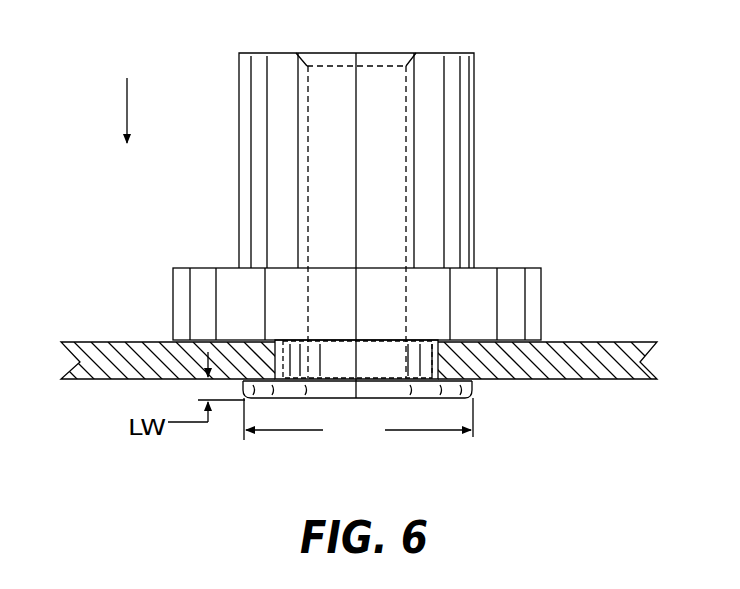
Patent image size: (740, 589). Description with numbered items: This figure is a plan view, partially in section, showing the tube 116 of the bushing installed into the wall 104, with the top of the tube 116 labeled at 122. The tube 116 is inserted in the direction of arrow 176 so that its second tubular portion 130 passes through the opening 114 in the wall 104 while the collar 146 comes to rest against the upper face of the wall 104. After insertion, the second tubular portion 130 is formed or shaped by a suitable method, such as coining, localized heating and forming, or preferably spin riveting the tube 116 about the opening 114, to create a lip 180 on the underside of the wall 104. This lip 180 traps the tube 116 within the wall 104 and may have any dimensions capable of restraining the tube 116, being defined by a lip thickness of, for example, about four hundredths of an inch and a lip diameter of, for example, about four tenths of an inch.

The wall 104 is at (577, 342).
The opening 114 is at (399, 437).
The tube 116 is at (514, 124).
The top recess 122 is at (375, 44).
The second tubular portion 130 is at (528, 385).
The collar 146 is at (178, 303).
The arrow 176 is at (127, 106).
The lip 180 is at (474, 393).